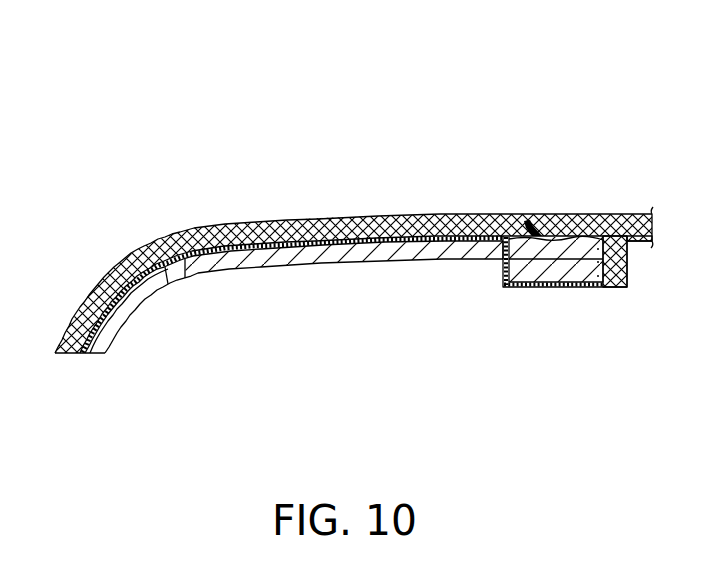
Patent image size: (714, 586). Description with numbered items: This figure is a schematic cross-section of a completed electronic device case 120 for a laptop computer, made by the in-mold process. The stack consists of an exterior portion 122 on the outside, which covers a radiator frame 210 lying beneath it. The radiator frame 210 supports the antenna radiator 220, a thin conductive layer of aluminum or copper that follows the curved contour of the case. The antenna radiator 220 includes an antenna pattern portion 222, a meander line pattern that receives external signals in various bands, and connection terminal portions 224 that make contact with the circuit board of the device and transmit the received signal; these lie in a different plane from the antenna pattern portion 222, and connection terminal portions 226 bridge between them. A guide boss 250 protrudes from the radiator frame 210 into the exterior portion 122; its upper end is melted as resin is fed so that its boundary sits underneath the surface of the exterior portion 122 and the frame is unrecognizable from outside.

The electronic device case 120 is at (209, 57).
The exterior portion 122 is at (221, 225).
The antenna pattern portion 222 is at (440, 215).
The antenna radiator 220 is at (130, 302).
The antenna radiator frame 210 is at (314, 266).
The connection terminal portions 224 is at (585, 289).
The connection terminal portions 226 is at (495, 279).
The guide boss 250 is at (527, 224).